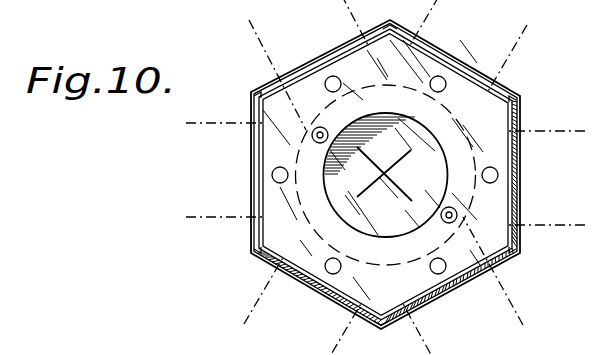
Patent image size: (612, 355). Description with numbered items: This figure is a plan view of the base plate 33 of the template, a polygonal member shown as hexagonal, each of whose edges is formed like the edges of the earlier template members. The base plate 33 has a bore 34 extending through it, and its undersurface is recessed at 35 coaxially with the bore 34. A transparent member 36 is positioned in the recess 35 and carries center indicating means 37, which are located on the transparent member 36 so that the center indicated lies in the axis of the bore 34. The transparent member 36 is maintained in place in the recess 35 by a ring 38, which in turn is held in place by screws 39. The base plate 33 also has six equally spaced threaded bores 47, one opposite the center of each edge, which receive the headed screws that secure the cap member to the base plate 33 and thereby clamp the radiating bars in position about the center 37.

The base plate 33 is at (272, 265).
The bore 34 is at (325, 296).
The recess 35 is at (429, 305).
The transparent member 36 is at (323, 178).
The center indicating means 37 is at (395, 179).
The ring 38 is at (511, 150).
The screws 39 is at (318, 128).
The threaded bores 47 is at (440, 77).